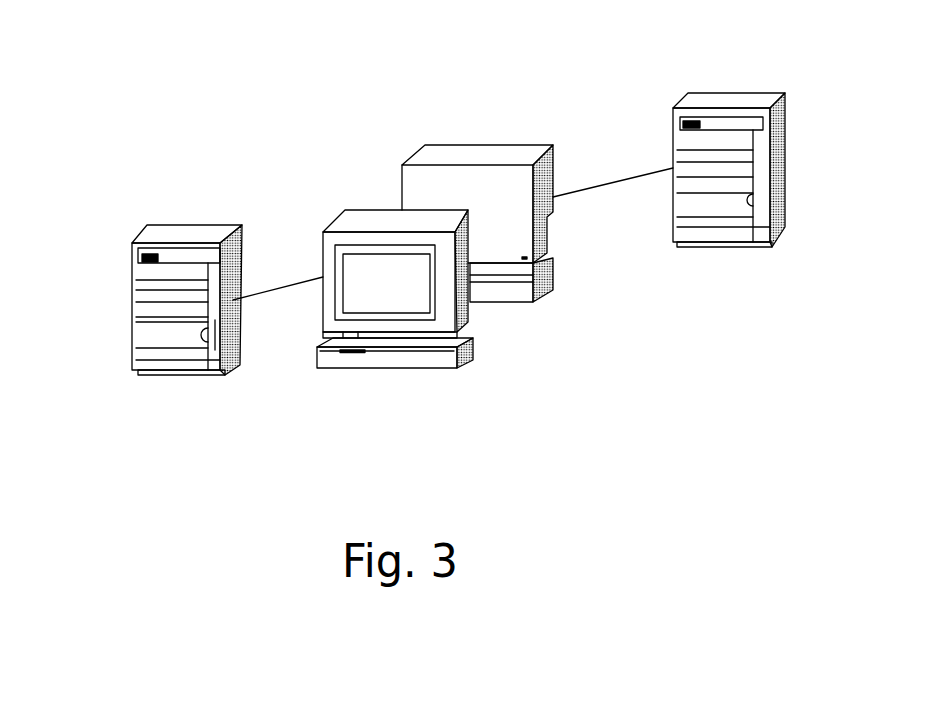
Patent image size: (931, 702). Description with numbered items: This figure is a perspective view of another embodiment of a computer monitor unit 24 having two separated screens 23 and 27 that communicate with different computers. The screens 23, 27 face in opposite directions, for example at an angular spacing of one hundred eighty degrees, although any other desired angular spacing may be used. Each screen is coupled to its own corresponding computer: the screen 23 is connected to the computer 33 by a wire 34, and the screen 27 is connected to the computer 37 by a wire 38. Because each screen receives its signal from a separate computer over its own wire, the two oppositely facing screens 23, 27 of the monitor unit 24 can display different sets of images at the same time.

The screen 23 is at (387, 302).
The monitor unit 24 is at (576, 89).
The screen 27 is at (462, 145).
The computer 33 is at (132, 300).
The wire 34 is at (277, 287).
The computer 37 is at (777, 168).
The wire 38 is at (602, 187).